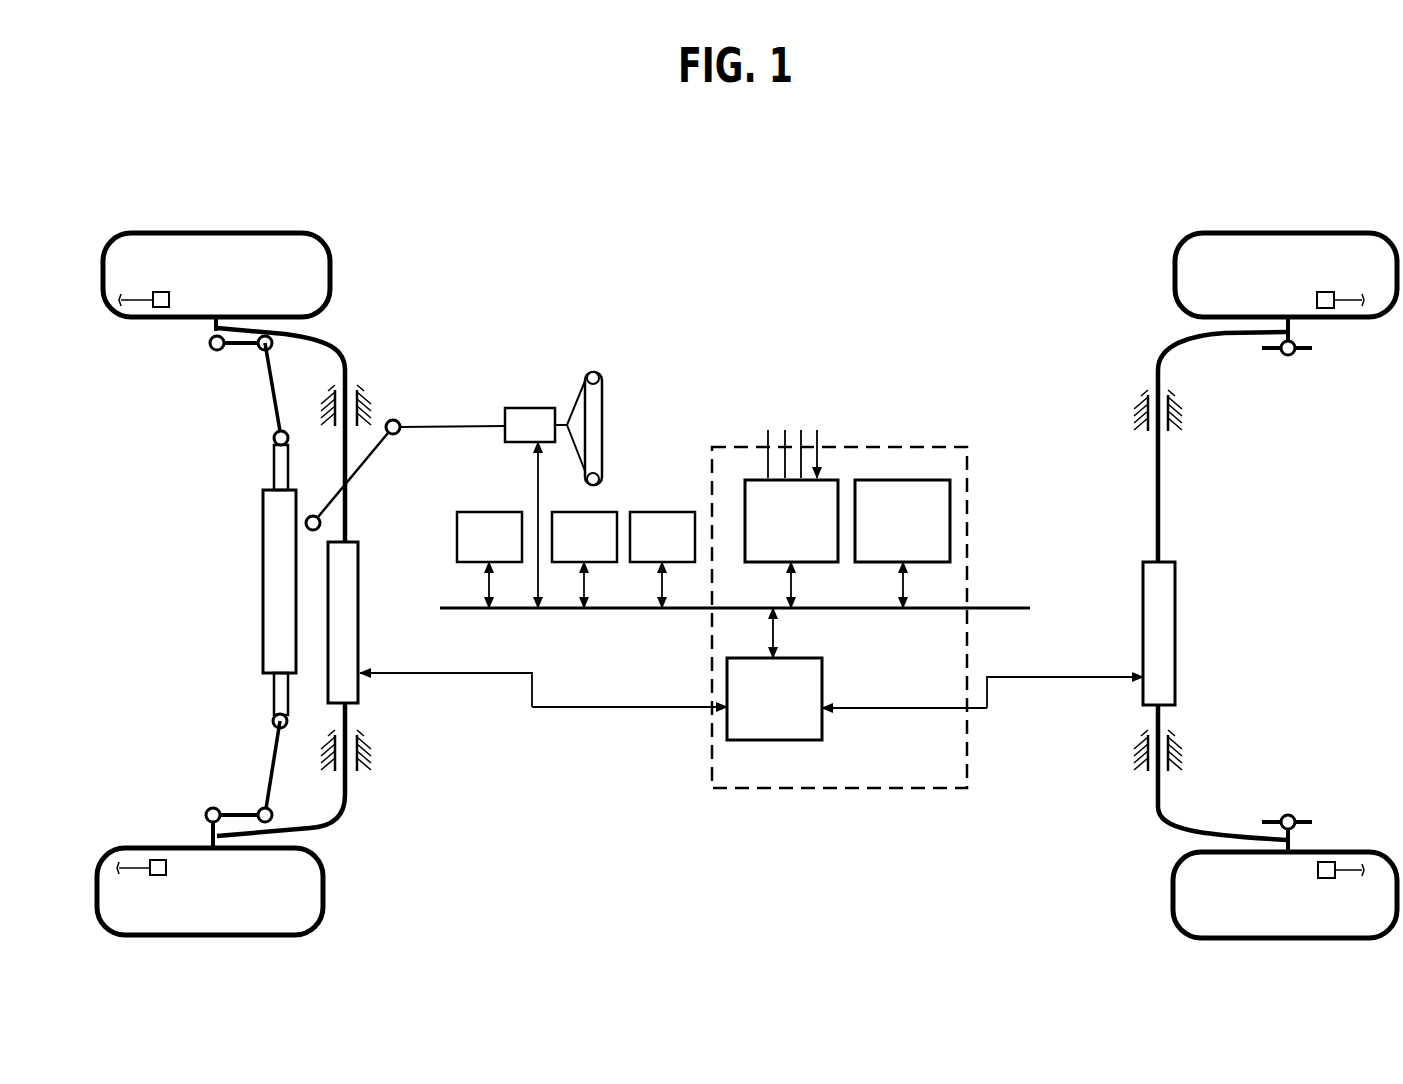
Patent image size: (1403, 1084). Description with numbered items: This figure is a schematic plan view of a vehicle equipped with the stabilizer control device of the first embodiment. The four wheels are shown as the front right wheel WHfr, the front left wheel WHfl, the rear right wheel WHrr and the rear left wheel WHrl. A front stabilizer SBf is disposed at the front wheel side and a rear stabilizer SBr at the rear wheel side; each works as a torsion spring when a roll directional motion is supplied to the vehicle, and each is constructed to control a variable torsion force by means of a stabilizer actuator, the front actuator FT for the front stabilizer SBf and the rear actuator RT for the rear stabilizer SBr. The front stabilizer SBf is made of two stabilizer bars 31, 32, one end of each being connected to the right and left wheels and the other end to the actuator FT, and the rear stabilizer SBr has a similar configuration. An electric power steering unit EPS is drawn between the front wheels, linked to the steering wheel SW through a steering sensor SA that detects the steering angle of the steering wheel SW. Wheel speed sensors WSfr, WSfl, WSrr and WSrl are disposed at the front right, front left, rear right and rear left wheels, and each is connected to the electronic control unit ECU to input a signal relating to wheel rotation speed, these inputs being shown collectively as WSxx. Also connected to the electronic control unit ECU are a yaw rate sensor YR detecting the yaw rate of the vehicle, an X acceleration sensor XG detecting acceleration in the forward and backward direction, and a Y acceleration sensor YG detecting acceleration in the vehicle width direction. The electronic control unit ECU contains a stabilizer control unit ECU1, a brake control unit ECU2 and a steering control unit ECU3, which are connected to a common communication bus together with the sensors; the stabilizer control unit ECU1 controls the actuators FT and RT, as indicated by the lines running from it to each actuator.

The front right wheel WHfr is at (216, 275).
The front left wheel WHfl is at (210, 891).
The rear right wheel WHrr is at (1286, 275).
The rear left wheel WHrl is at (1285, 895).
The wheel speed sensor WSfr is at (190, 333).
The wheel speed sensor WSfl is at (190, 829).
The wheel speed sensor WSrr is at (1319, 335).
The wheel speed sensor WSrl is at (1318, 834).
The wheel speed sensor signals WSxx is at (792, 439).
The front stabilizer SBf is at (334, 330).
The rear stabilizer SBr is at (1168, 328).
The stabilizer bar 31 is at (347, 352).
The stabilizer bar 32 is at (347, 790).
The electric power steering EPS is at (263, 532).
The stabilizer actuator FT is at (360, 597).
The stabilizer actuator RT is at (1175, 572).
The steering wheel SW is at (588, 372).
The steering sensor SA is at (530, 508).
The yaw rate sensor YR is at (489, 560).
The X acceleration sensor XG is at (584, 560).
The Y acceleration sensor YG is at (662, 560).
The electronic control unit ECU is at (858, 447).
The stabilizer control unit ECU1 is at (751, 674).
The brake control unit ECU2 is at (791, 544).
The steering control unit ECU3 is at (902, 544).